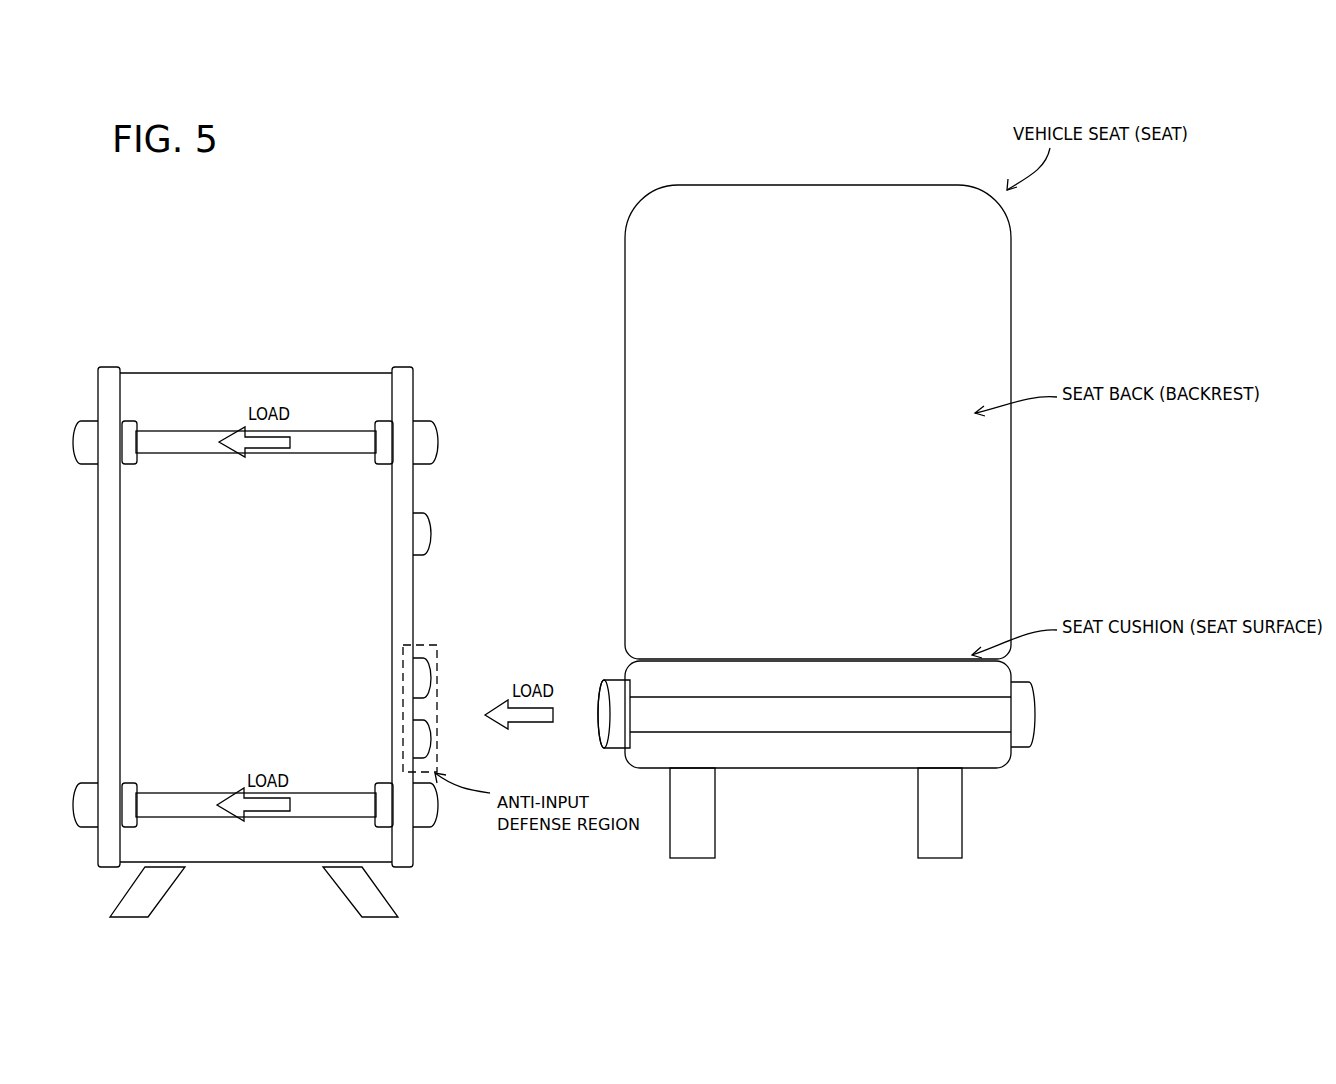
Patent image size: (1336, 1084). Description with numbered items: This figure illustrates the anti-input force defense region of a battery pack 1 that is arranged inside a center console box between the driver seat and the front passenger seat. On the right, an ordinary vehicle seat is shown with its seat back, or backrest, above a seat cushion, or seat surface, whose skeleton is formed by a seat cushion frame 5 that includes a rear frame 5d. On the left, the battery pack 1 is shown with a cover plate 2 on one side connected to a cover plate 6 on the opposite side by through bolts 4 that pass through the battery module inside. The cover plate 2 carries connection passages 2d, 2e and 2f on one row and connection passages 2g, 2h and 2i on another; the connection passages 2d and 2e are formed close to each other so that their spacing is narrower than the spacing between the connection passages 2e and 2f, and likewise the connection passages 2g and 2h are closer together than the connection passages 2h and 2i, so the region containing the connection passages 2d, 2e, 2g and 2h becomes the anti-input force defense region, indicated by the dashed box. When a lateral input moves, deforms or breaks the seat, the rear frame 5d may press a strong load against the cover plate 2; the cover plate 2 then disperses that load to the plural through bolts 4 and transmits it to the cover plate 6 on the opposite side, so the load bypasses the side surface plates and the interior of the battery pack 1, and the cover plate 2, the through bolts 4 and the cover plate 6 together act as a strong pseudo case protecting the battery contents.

The battery pack 1 is at (282, 362).
The cover plate 2 is at (407, 366).
The through bolts 4 is at (175, 430).
The cover plate 6 is at (108, 366).
The connection passage 2f is at (486, 531).
The connection passage 2i is at (430, 537).
The connection passage 2e is at (492, 672).
The connection passage 2h is at (430, 678).
The connection passage 2d is at (493, 747).
The connection passage 2g is at (430, 740).
The seat cushion frame 5 is at (998, 785).
The rear frame 5d is at (980, 723).